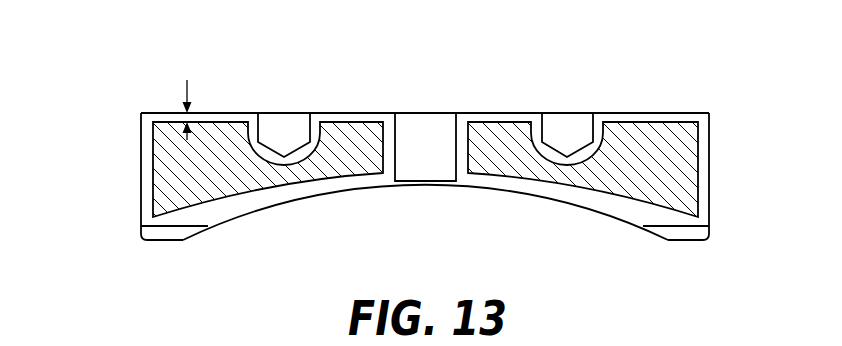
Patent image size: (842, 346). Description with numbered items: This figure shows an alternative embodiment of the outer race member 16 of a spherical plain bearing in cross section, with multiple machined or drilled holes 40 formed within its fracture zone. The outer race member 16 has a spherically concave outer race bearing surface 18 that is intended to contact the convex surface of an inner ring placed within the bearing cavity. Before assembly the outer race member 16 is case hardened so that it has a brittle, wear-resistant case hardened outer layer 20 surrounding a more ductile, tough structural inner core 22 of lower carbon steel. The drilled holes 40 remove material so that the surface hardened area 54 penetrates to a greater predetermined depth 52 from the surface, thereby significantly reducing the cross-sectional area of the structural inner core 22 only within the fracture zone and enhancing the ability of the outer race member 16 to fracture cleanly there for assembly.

The outer race member 16 is at (140, 142).
The outer race bearing surface 18 is at (368, 188).
The case hardened outer layer 20 is at (690, 113).
The structural inner core 22 is at (180, 189).
The drilled hole 40 is at (275, 128).
The predetermined depth 52 is at (187, 117).
The surface hardened area 54 is at (140, 112).